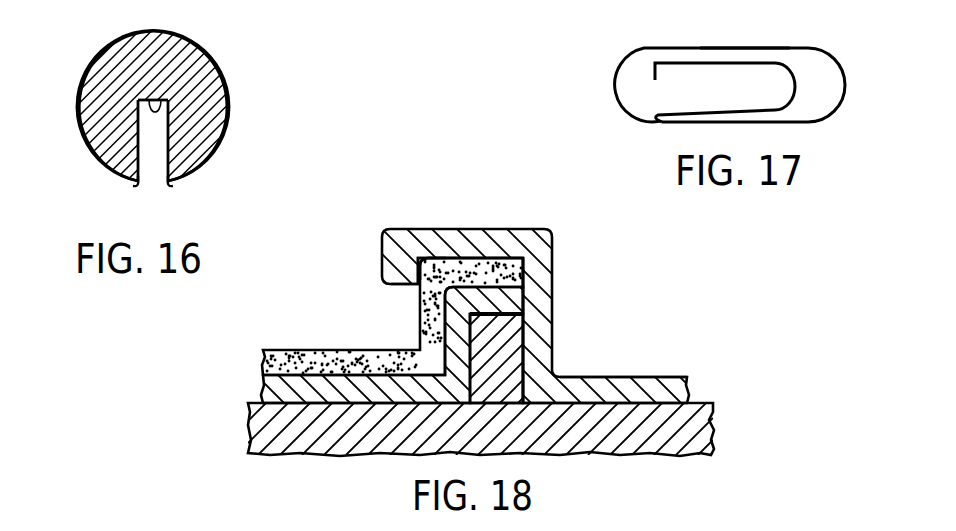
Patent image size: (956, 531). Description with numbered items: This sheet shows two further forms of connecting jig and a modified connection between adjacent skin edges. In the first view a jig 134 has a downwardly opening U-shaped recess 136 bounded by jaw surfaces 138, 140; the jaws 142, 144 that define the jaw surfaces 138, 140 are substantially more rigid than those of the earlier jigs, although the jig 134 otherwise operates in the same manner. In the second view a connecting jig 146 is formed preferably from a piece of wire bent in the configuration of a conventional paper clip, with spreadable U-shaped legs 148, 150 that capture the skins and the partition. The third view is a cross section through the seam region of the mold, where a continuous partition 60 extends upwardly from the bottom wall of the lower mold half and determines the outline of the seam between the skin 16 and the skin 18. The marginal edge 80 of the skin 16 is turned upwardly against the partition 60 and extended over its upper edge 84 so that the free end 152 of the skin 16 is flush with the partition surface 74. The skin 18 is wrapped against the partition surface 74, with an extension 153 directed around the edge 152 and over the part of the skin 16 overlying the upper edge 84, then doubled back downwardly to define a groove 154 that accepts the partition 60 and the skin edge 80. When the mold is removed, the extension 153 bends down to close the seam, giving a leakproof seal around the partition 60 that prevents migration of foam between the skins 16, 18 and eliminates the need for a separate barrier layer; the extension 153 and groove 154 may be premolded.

In FIG. 16, the jig 134 is at (217, 67).
In FIG. 16, the U-shaped recess 136 is at (161, 100).
In FIG. 16, the jaw surface 138 is at (160, 181).
In FIG. 16, the jaw surface 140 is at (146, 180).
In FIG. 16, the jaw 142 is at (192, 147).
In FIG. 16, the jaw 144 is at (117, 145).
In FIG. 17, the connecting jig 146 is at (808, 49).
In FIG. 17, the U-shaped leg 148 is at (707, 63).
In FIG. 17, the U-shaped leg 150 is at (753, 48).
In FIG. 18, the skin 16 is at (343, 387).
In FIG. 18, the skin 18 is at (637, 390).
In FIG. 18, the partition 60 is at (525, 318).
In FIG. 18, the peripheral wall surface 74 is at (525, 343).
In FIG. 18, the marginal edge 80 is at (433, 333).
In FIG. 18, the upper edge 84 is at (495, 313).
In FIG. 18, the free end 152 is at (528, 270).
In FIG. 18, the extension 153 is at (470, 245).
In FIG. 18, the groove 154 is at (432, 263).